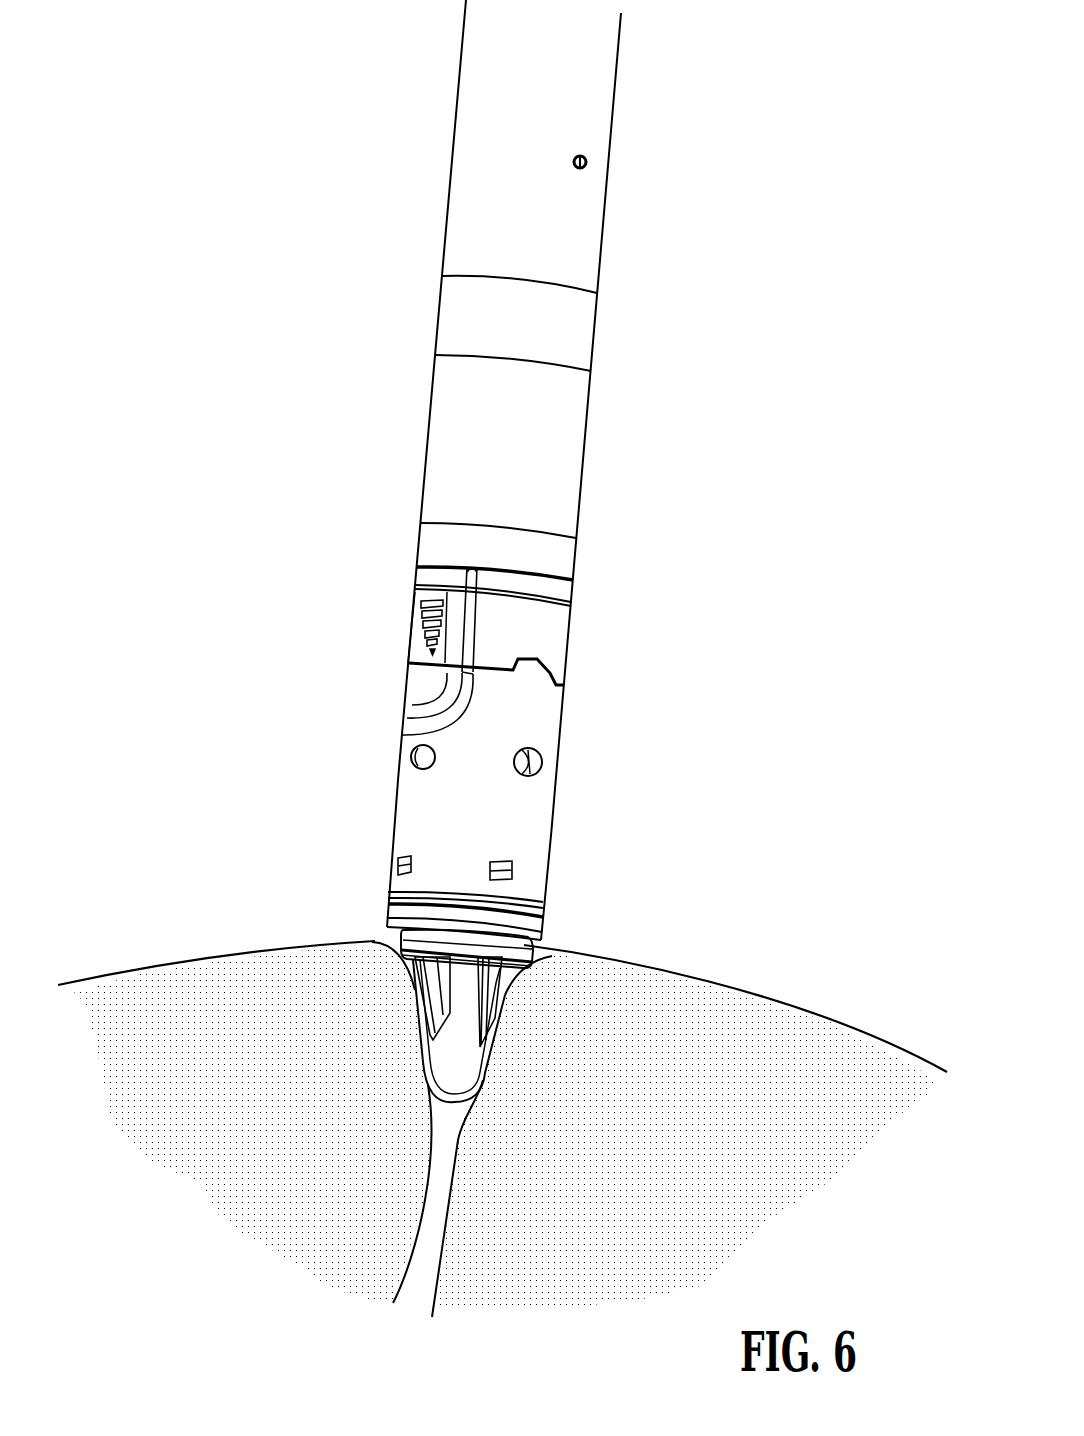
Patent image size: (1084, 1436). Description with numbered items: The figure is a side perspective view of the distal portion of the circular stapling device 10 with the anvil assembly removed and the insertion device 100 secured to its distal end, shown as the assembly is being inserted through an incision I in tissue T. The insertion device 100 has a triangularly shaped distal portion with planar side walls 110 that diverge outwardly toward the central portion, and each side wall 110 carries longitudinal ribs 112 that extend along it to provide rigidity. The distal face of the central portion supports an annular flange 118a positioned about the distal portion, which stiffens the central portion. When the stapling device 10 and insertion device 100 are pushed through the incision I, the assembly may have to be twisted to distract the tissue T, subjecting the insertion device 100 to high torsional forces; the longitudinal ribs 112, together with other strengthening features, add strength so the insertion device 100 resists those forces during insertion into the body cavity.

The circular stapling device 10 is at (439, 672).
The annular flange 118a is at (492, 952).
The insertion device 100 is at (392, 1118).
The longitudinal ribs 112 is at (440, 1007).
The side walls 110 is at (452, 1072).
The incision I is at (450, 1150).
The tissue T is at (740, 1072).